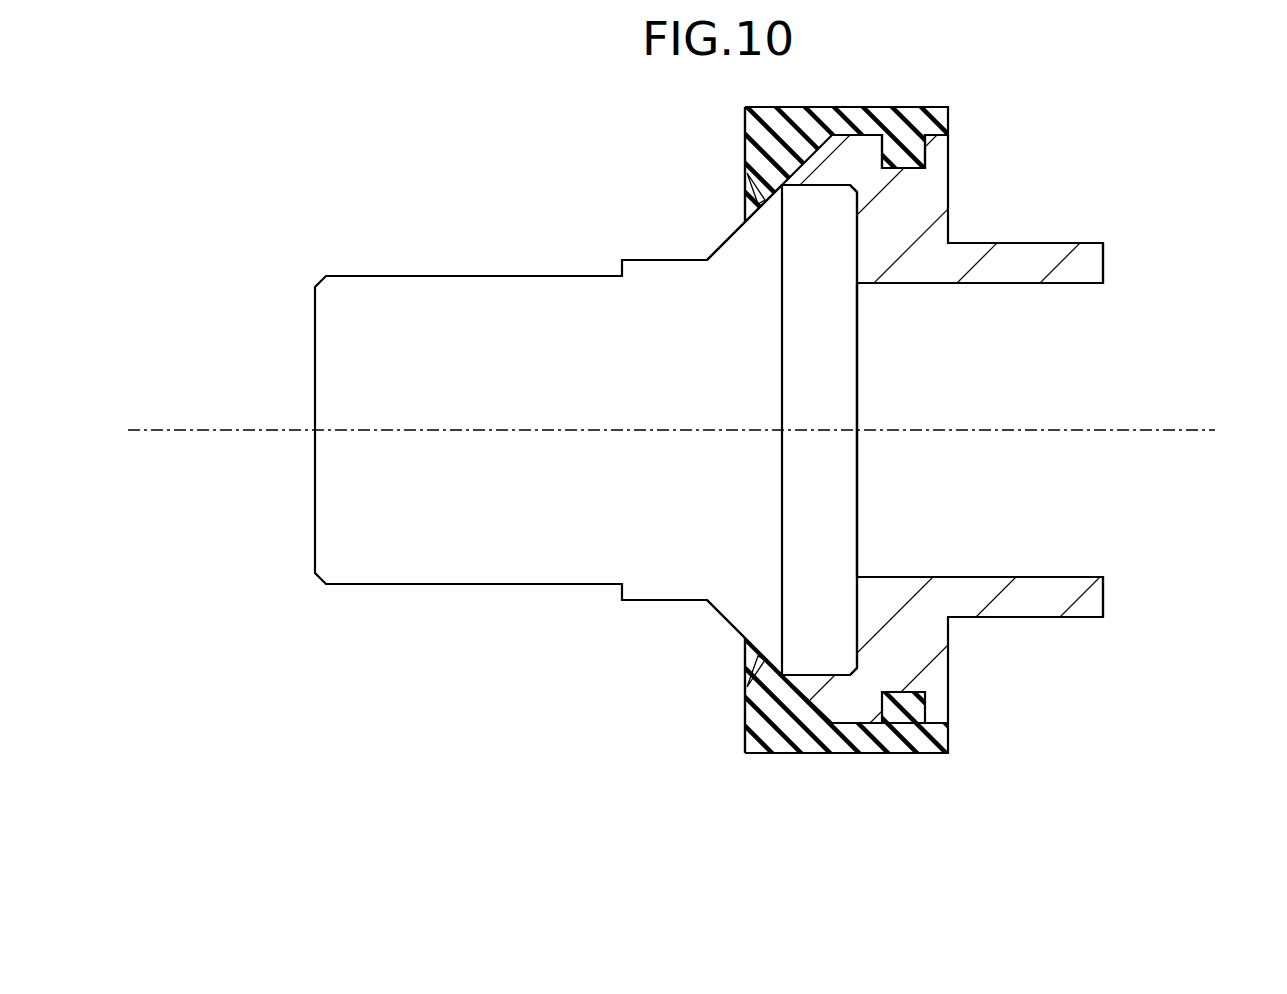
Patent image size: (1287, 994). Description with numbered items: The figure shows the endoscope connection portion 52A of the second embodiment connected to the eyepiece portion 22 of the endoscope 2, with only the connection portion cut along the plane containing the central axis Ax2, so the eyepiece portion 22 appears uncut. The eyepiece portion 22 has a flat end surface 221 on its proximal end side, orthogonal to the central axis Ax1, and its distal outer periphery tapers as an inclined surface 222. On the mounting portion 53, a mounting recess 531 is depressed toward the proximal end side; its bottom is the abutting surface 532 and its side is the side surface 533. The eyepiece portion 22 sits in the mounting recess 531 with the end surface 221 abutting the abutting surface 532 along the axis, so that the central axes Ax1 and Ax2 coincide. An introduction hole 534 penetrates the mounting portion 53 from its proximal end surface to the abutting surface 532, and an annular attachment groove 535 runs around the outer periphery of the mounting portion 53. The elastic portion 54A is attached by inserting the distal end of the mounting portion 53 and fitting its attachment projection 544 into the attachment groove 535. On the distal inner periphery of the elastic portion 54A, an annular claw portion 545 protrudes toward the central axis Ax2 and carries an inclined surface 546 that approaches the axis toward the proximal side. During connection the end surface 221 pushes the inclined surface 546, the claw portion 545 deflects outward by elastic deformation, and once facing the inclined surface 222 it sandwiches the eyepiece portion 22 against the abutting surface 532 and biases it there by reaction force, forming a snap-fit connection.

The endoscope 2 is at (677, 412).
The eyepiece portion 22 is at (430, 567).
The end surface 221 is at (857, 238).
The inclined surface 222 is at (730, 262).
The endoscope connection portion 52A is at (856, 506).
The mounting portion 53 is at (912, 653).
The mounting recess 531 is at (769, 527).
The abutting surface 532 is at (813, 675).
The side surface 533 is at (857, 605).
The introduction hole 534 is at (1052, 283).
The attachment groove 535 is at (905, 153).
The elastic portion 54A is at (858, 740).
The attachment projection 544 is at (895, 705).
The claw portion 545 is at (762, 699).
The inclined surface 546 is at (748, 187).
The central axis Ax1 is at (671, 392).
The central axis Ax2 is at (200, 430).